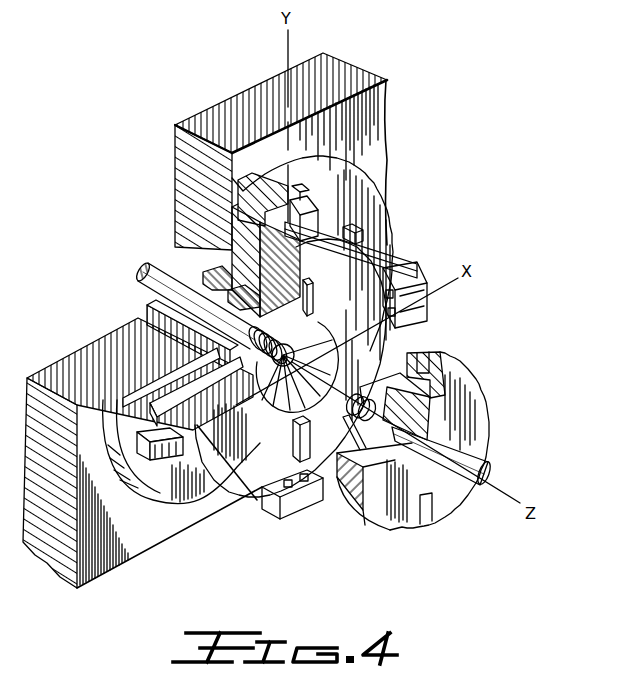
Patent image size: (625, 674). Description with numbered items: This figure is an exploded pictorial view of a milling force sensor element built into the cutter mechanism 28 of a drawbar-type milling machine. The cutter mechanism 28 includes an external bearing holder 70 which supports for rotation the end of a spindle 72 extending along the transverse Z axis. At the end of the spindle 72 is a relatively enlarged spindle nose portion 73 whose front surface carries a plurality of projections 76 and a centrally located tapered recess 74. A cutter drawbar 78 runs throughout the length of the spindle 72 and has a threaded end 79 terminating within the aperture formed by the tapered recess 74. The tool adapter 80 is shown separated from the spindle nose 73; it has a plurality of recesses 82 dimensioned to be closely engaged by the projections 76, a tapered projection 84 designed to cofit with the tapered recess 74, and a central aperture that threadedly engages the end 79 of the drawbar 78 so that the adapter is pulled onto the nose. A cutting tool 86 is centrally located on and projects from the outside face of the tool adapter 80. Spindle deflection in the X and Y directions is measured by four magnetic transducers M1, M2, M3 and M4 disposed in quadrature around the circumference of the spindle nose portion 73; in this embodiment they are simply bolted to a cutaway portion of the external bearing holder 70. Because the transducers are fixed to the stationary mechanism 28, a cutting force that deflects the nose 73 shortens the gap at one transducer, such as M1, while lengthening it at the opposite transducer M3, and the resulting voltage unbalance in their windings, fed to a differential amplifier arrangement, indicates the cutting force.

The cutter mechanism 28 is at (387, 122).
The external bearing holder 70 is at (340, 177).
The spindle 72 is at (151, 303).
The spindle nose portion 73 is at (395, 342).
The tapered recess 74 is at (278, 408).
The projections 76 is at (316, 296).
The cutter drawbar 78 is at (148, 262).
The threaded end 79 is at (287, 357).
The tool adapter 80 is at (491, 421).
The recesses 82 is at (446, 354).
The tapered projection 84 is at (356, 459).
The cutting tool 86 is at (490, 464).
The magnetic transducer M1 is at (311, 214).
The magnetic transducer M2 is at (425, 276).
The magnetic transducer M3 is at (303, 510).
The magnetic transducer M4 is at (142, 457).